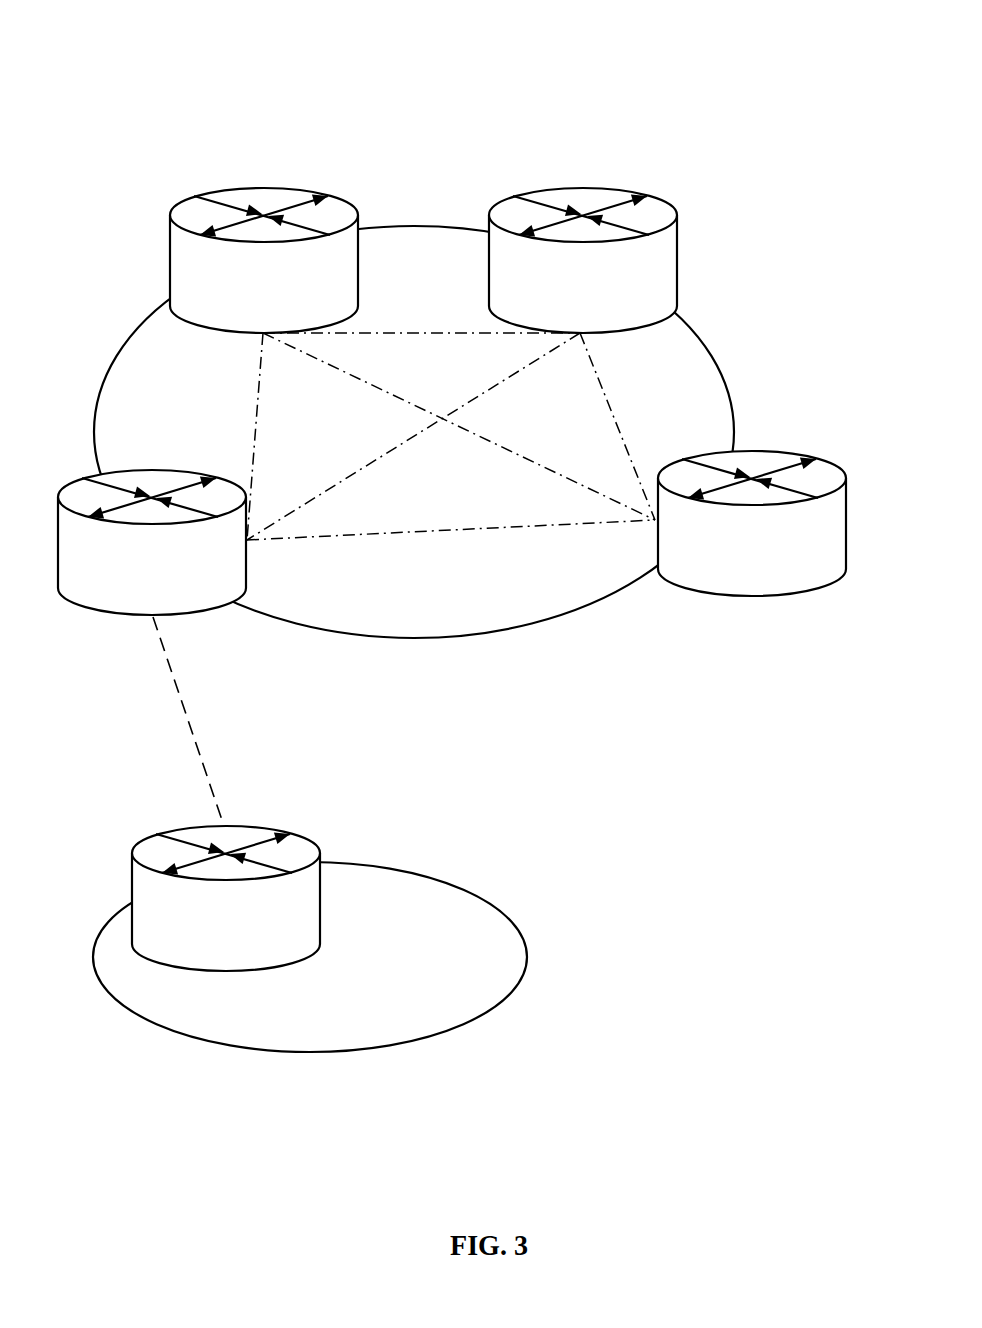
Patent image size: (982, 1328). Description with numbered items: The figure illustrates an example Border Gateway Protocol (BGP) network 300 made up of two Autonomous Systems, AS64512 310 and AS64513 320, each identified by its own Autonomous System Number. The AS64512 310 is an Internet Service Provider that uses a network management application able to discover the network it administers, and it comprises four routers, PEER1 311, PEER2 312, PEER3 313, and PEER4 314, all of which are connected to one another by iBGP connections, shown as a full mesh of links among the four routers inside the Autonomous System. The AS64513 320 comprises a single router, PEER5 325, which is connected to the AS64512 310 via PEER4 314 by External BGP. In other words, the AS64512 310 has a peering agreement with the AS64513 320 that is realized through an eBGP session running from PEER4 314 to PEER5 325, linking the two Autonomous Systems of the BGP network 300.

The Border Gateway Protocol (BGP) network 300 is at (453, 61).
The AS64512 310 is at (808, 346).
The PEER1 311 is at (283, 299).
The PEER2 312 is at (602, 299).
The PEER3 313 is at (771, 562).
The PEER4 314 is at (171, 581).
The AS64513 320 is at (622, 926).
The PEER5 325 is at (245, 937).